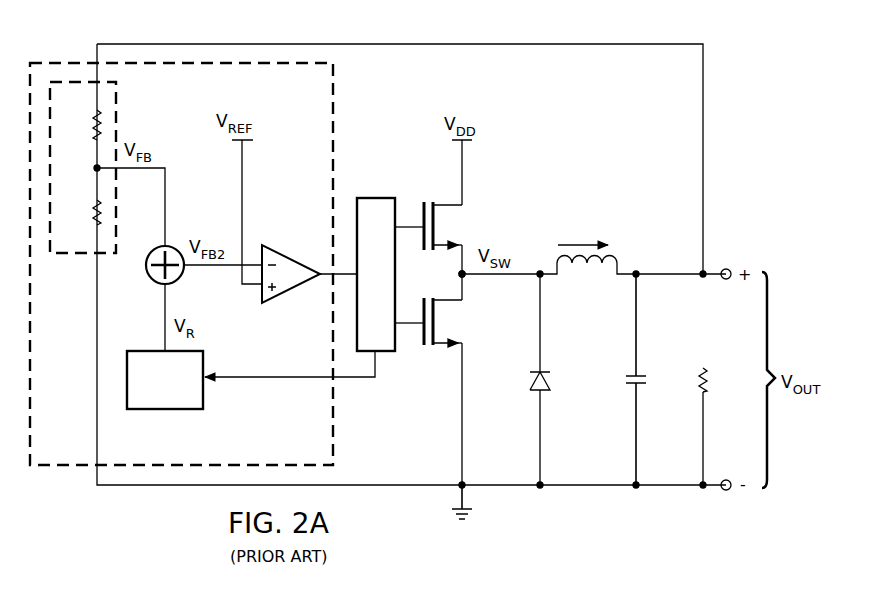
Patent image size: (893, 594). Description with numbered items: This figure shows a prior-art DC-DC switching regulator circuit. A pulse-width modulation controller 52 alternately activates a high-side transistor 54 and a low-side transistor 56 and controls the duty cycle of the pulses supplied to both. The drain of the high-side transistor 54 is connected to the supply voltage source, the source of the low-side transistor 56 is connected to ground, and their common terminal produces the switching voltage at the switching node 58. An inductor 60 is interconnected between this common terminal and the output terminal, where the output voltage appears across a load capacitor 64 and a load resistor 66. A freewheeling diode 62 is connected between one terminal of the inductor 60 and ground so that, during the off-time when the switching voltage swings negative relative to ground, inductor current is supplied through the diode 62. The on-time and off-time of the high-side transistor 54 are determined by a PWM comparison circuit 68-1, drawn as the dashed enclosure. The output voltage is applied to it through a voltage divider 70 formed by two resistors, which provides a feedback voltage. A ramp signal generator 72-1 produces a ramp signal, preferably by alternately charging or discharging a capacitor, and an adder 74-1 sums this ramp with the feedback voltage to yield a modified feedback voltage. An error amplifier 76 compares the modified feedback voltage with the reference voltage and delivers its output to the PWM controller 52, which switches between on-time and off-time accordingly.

The PWM comparison circuit 68-1 is at (78, 60).
The voltage divider 70 is at (80, 257).
The adder 74-1 is at (156, 284).
The ramp signal generator 72-1 is at (153, 410).
The error amplifier 76 is at (290, 258).
The PWM controller 52 is at (366, 197).
The high-side transistor 54 is at (414, 205).
The low-side transistor 56 is at (420, 336).
The switching node 58 is at (466, 278).
The inductor 60 is at (619, 264).
The freewheeling diode 62 is at (548, 380).
The load capacitor 64 is at (645, 381).
The load resistor 66 is at (707, 380).